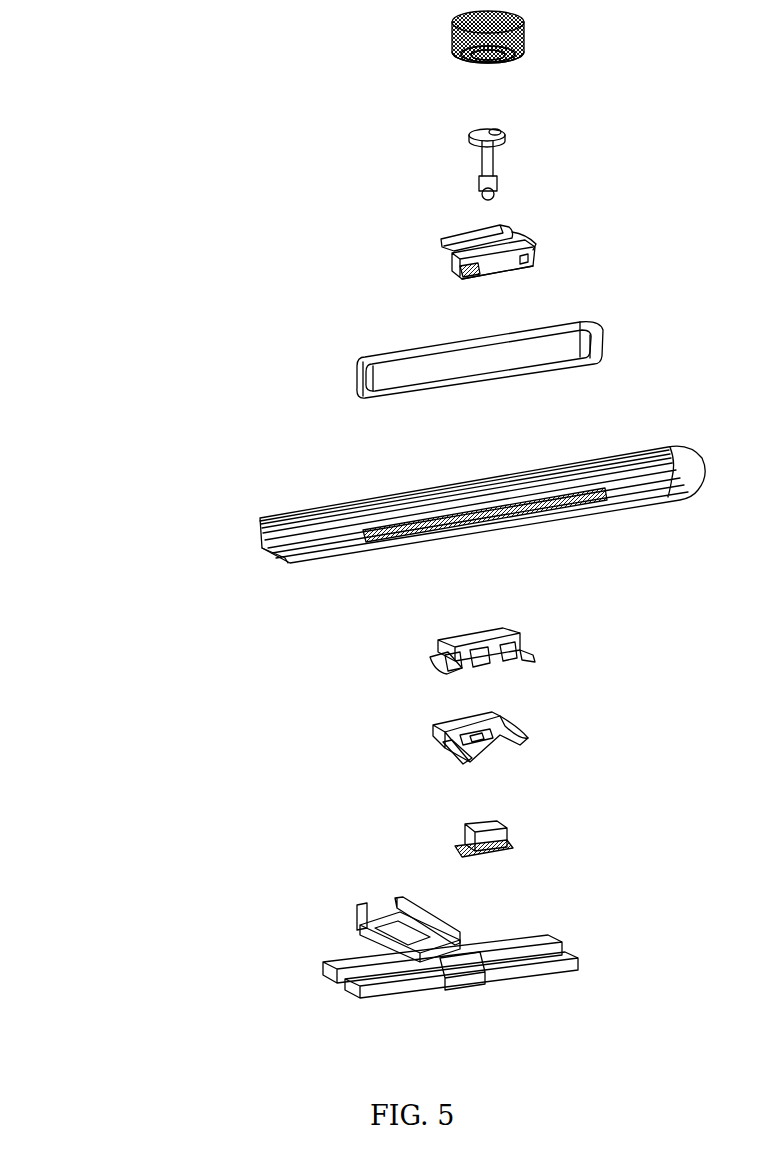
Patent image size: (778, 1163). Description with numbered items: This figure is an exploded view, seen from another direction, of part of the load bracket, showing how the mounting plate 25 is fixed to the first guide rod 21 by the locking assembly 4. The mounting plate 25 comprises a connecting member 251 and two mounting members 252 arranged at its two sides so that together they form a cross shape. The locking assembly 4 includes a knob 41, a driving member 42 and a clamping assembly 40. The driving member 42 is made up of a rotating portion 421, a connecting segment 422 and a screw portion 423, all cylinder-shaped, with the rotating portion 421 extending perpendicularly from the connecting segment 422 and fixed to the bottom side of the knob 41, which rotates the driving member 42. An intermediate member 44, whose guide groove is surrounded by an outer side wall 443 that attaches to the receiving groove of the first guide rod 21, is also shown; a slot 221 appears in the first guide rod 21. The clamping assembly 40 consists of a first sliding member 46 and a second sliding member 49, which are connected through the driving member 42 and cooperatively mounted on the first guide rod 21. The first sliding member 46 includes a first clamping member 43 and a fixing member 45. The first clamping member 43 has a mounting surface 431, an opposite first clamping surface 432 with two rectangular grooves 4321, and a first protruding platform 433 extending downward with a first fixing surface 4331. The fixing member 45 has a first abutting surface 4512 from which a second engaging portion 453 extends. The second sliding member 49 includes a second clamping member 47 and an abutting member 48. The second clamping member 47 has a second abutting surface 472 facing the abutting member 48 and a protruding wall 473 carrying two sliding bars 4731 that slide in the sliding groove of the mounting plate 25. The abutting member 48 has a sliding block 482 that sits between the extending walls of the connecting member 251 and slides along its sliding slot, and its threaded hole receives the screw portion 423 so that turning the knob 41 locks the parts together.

The locking assembly 4 is at (98, 290).
The clamping assembly 40 is at (188, 225).
The knob 41 is at (450, 22).
The driving member 42 is at (343, 133).
The rotating portion 421 is at (468, 134).
The connecting segment 422 is at (480, 158).
The screw portion 423 is at (478, 183).
The first clamping member 43 is at (315, 213).
The mounting surface 431 is at (442, 237).
The first clamping surface 432 is at (456, 250).
The rectangular groove 4321 is at (536, 240).
The first protruding platform 433 is at (458, 259).
The first fixing surface 4331 is at (455, 272).
The intermediate member 44 is at (345, 350).
The outer side wall 443 is at (424, 377).
The first sliding member 46 is at (645, 228).
The first guide rod 21 is at (258, 519).
The slot 221 is at (430, 542).
The fixing member 45 is at (438, 630).
The second engaging portion 453 is at (485, 655).
The first abutting surface 4512 is at (473, 658).
The second sliding member 49 is at (340, 718).
The second clamping member 47 is at (425, 728).
The protruding wall 473 is at (530, 740).
The second abutting surface 472 is at (500, 752).
The sliding bar 4731 is at (470, 762).
The abutting member 48 is at (440, 825).
The sliding block 482 is at (455, 848).
The mounting plate 25 is at (345, 903).
The connecting member 251 is at (360, 930).
The mounting member 252 is at (327, 980).